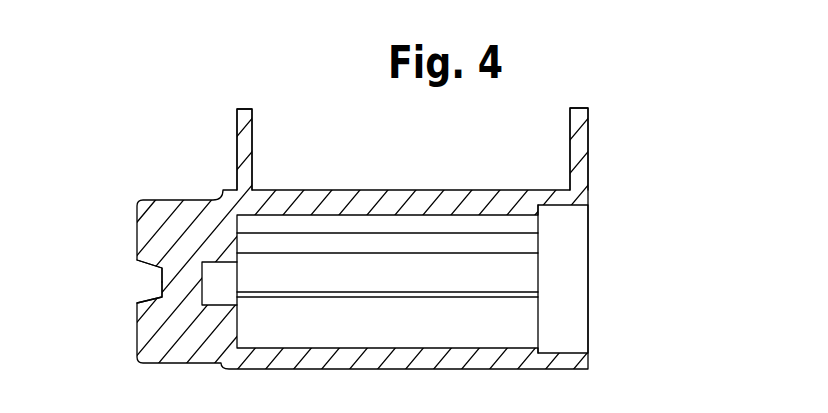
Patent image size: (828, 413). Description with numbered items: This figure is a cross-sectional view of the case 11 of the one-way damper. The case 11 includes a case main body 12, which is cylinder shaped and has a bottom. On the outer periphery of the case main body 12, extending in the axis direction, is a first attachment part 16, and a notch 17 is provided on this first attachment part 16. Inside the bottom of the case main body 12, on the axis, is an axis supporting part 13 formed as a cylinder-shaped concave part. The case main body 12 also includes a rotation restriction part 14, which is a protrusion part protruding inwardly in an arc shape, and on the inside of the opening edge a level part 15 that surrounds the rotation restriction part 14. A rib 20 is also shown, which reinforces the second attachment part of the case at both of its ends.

The case 11 is at (595, 287).
The case main body 12 is at (453, 205).
The axis supporting part 13 is at (218, 278).
The rotation restriction part 14 is at (353, 282).
The level part 15 is at (550, 215).
The first attachment part 16 is at (160, 230).
The notch 17 is at (157, 279).
The rib 20 is at (242, 147).